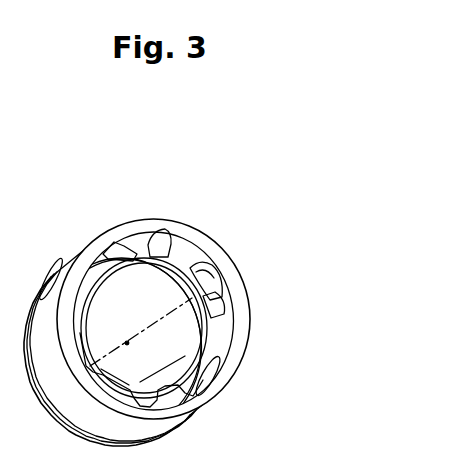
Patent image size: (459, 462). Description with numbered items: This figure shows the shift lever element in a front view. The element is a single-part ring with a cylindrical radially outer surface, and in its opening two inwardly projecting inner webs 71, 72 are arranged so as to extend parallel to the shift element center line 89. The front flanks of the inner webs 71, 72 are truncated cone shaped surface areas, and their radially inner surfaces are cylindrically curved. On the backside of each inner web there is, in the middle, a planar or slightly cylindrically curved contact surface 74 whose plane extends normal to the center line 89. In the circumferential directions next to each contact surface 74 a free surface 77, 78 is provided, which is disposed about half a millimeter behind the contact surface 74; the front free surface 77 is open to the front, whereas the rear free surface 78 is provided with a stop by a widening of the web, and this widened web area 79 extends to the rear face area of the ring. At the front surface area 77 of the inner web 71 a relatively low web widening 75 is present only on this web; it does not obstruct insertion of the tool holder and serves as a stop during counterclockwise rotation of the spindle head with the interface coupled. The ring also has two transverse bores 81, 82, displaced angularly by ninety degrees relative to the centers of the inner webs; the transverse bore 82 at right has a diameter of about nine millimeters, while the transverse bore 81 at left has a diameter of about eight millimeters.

The inner web 71 is at (214, 328).
The inner web 72 is at (214, 363).
The contact surface 74 is at (185, 260).
The web widening 75 is at (275, 287).
The free surface 77 is at (272, 253).
The free surface 78 is at (156, 248).
The widened web area 79 is at (133, 245).
The transverse bore 81 is at (60, 270).
The transverse bore 82 is at (218, 369).
The center line 89 is at (127, 343).